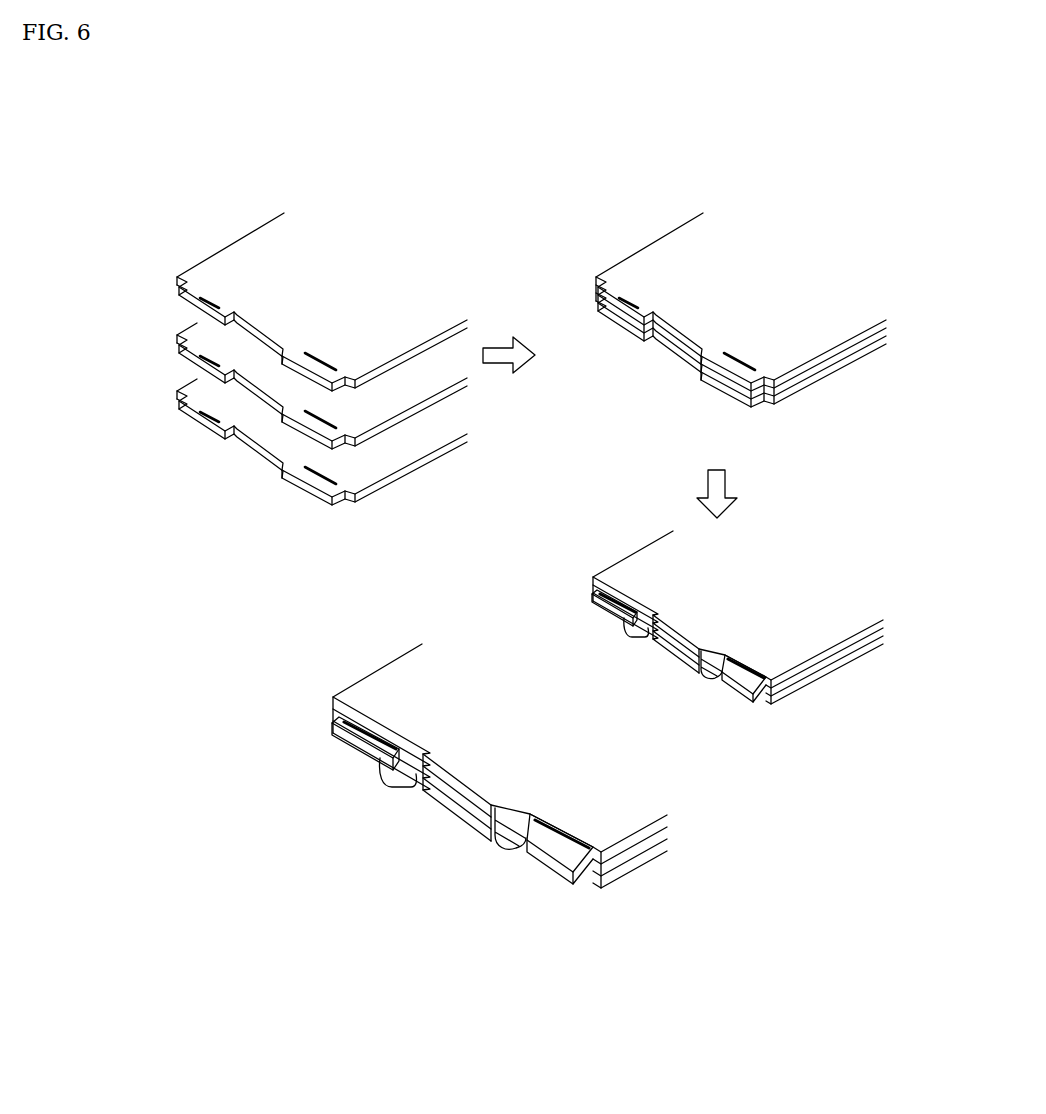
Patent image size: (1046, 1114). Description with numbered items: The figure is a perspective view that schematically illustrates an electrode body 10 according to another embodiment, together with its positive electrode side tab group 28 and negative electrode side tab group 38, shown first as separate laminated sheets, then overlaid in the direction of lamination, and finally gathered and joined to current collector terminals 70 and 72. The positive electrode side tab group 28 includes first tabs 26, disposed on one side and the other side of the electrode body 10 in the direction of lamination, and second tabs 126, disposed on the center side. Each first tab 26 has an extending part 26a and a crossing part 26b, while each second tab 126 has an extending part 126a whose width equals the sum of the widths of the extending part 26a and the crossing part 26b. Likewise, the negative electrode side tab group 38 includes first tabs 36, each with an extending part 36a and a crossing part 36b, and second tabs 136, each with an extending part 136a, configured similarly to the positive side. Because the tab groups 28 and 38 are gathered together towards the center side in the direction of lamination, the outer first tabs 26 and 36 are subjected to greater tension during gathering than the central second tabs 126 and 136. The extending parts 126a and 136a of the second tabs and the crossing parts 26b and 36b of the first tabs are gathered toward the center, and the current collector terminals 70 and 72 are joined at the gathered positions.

The electrode body 10 is at (243, 232).
The first tab 26 is at (176, 298).
The extending part 26a is at (234, 311).
The crossing part 26b is at (200, 298).
The first tab 36 is at (338, 385).
The extending part 36a is at (290, 347).
The crossing part 36b is at (328, 373).
The second tab 126 is at (177, 352).
The extending part 126a is at (198, 355).
The second tab 136 is at (338, 443).
The extending part 136a is at (303, 420).
The positive electrode side tab group 28 is at (620, 330).
The negative electrode side tab group 38 is at (713, 387).
The current collector terminal 70 is at (612, 602).
The current collector terminal 72 is at (747, 682).